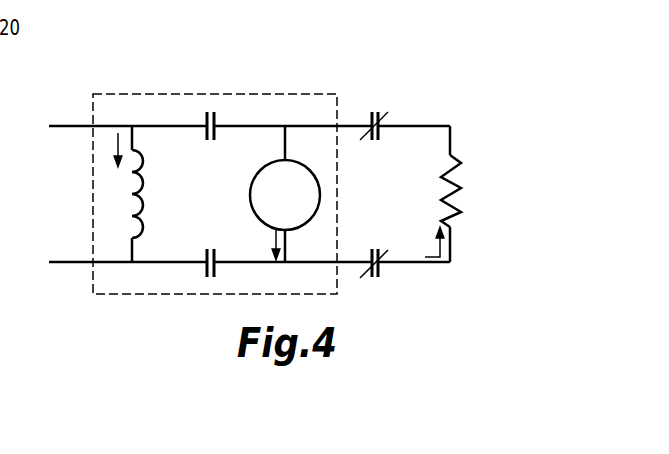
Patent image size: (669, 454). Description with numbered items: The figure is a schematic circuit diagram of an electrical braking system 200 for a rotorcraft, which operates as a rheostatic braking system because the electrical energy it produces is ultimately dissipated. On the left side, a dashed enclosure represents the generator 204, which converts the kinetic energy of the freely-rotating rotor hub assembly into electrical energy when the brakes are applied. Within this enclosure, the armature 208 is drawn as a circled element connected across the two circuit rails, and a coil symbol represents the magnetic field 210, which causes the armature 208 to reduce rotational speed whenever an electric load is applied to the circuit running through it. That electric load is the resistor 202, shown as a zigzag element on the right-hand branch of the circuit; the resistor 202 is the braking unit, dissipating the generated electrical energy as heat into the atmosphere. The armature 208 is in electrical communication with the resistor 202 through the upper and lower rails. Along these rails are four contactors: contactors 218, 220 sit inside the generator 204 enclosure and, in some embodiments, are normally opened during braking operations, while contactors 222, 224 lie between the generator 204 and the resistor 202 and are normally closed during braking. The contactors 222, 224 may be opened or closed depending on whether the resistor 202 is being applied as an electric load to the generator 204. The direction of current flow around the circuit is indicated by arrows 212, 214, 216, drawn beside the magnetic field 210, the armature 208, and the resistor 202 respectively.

The electrical braking system 200 is at (417, 89).
The resistor 202 is at (458, 199).
The generator 204 is at (143, 298).
The armature 208 is at (303, 206).
The magnetic field 210 is at (130, 193).
The arrow 212 is at (117, 143).
The arrow 214 is at (270, 236).
The arrow 216 is at (432, 263).
The contactor 218 is at (212, 108).
The contactor 220 is at (208, 283).
The contactor 222 is at (373, 110).
The contactor 224 is at (375, 280).